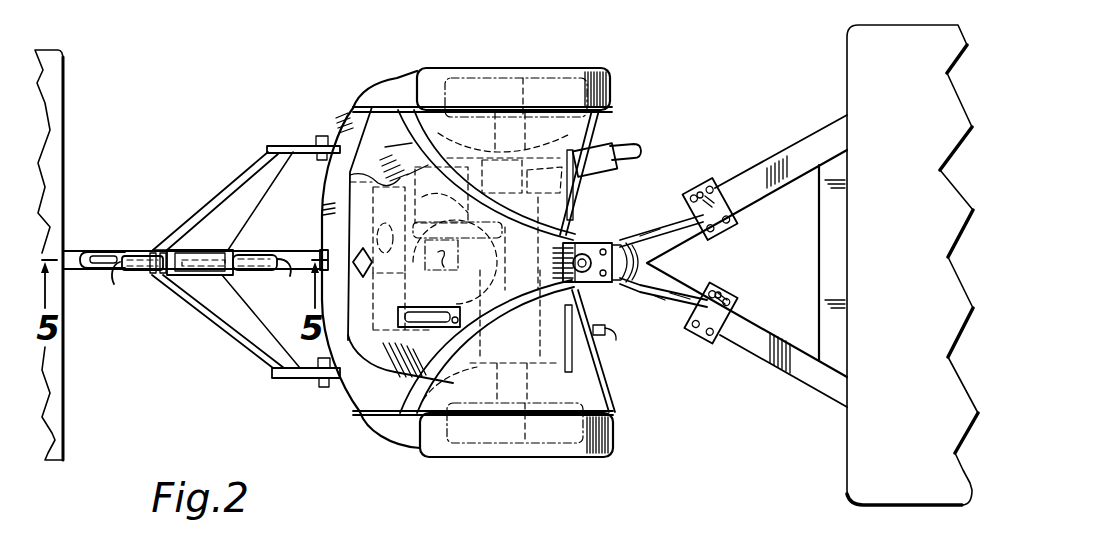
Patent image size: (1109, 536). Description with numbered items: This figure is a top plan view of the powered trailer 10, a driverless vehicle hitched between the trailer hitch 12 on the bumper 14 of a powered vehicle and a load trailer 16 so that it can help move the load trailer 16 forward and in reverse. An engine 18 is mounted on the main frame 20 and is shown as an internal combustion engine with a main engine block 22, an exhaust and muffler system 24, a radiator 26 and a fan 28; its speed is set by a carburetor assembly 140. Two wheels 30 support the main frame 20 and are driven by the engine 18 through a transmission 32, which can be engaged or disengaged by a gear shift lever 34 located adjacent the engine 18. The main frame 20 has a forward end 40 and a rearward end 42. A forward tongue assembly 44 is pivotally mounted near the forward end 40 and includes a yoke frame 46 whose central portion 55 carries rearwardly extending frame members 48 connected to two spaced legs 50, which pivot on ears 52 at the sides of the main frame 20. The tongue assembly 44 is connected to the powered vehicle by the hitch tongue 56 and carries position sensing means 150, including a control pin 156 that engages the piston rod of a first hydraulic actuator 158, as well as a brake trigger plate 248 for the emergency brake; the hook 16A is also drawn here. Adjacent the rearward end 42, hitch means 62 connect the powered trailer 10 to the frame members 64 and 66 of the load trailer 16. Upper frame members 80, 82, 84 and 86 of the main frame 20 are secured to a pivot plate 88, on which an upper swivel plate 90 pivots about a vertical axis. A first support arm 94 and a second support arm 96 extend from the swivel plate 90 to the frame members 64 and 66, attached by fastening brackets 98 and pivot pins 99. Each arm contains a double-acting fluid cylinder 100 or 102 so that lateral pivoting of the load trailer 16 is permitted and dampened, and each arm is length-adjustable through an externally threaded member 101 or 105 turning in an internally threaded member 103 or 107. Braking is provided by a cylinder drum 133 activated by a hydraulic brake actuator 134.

The powered trailer 10 is at (358, 76).
The trailer hitch 12 is at (75, 247).
The bumper 14 is at (65, 80).
The load trailer 16 is at (883, 246).
The hook rod 16A is at (262, 248).
The engine 18 is at (403, 176).
The main frame 20 is at (345, 418).
The main engine block 22 is at (490, 201).
The exhaust and muffler system 24 is at (613, 140).
The radiator 26 is at (376, 229).
The fan 28 is at (389, 301).
The wheels 30 is at (507, 77).
The transmission 32 is at (503, 334).
The gear shift lever 34 is at (450, 333).
The forward end 40 is at (328, 201).
The rearward end 42 is at (593, 360).
The forward tongue assembly 44 is at (203, 192).
The yoke frame 46 is at (171, 222).
The frame members 48 is at (257, 200).
The legs 50 is at (277, 146).
The ears 52 is at (317, 135).
The central portion 55 is at (198, 287).
The hitch tongue 56 is at (98, 250).
The hitch means 62 is at (731, 255).
The frame member 64 is at (797, 146).
The frame member 66 is at (773, 365).
The upper frame member 80 is at (430, 147).
The upper frame member 82 is at (417, 400).
The upper frame member 84 is at (604, 117).
The upper frame member 86 is at (610, 393).
The pivot plate 88 is at (587, 245).
The upper swivel plate 90 is at (590, 283).
The first support arm 94 is at (674, 208).
The second support arm 96 is at (663, 307).
The fastening brackets 98 is at (742, 220).
The pivot pins 99 is at (712, 190).
The double-acting fluid cylinder 100 is at (670, 307).
The externally threaded member 101 is at (720, 292).
The double-acting fluid cylinder 102 is at (621, 243).
The internally threaded member 103 is at (678, 288).
The externally threaded member 105 is at (705, 187).
The internally threaded member 107 is at (652, 232).
The cylinder drum 133 is at (521, 383).
The hydraulic brake actuator 134 is at (612, 339).
The carburetor assembly 140 is at (455, 262).
The position sensing means 150 is at (144, 223).
The control pin 156 is at (200, 257).
The first hydraulic actuator 158 is at (143, 270).
The brake trigger plate 248 is at (292, 388).